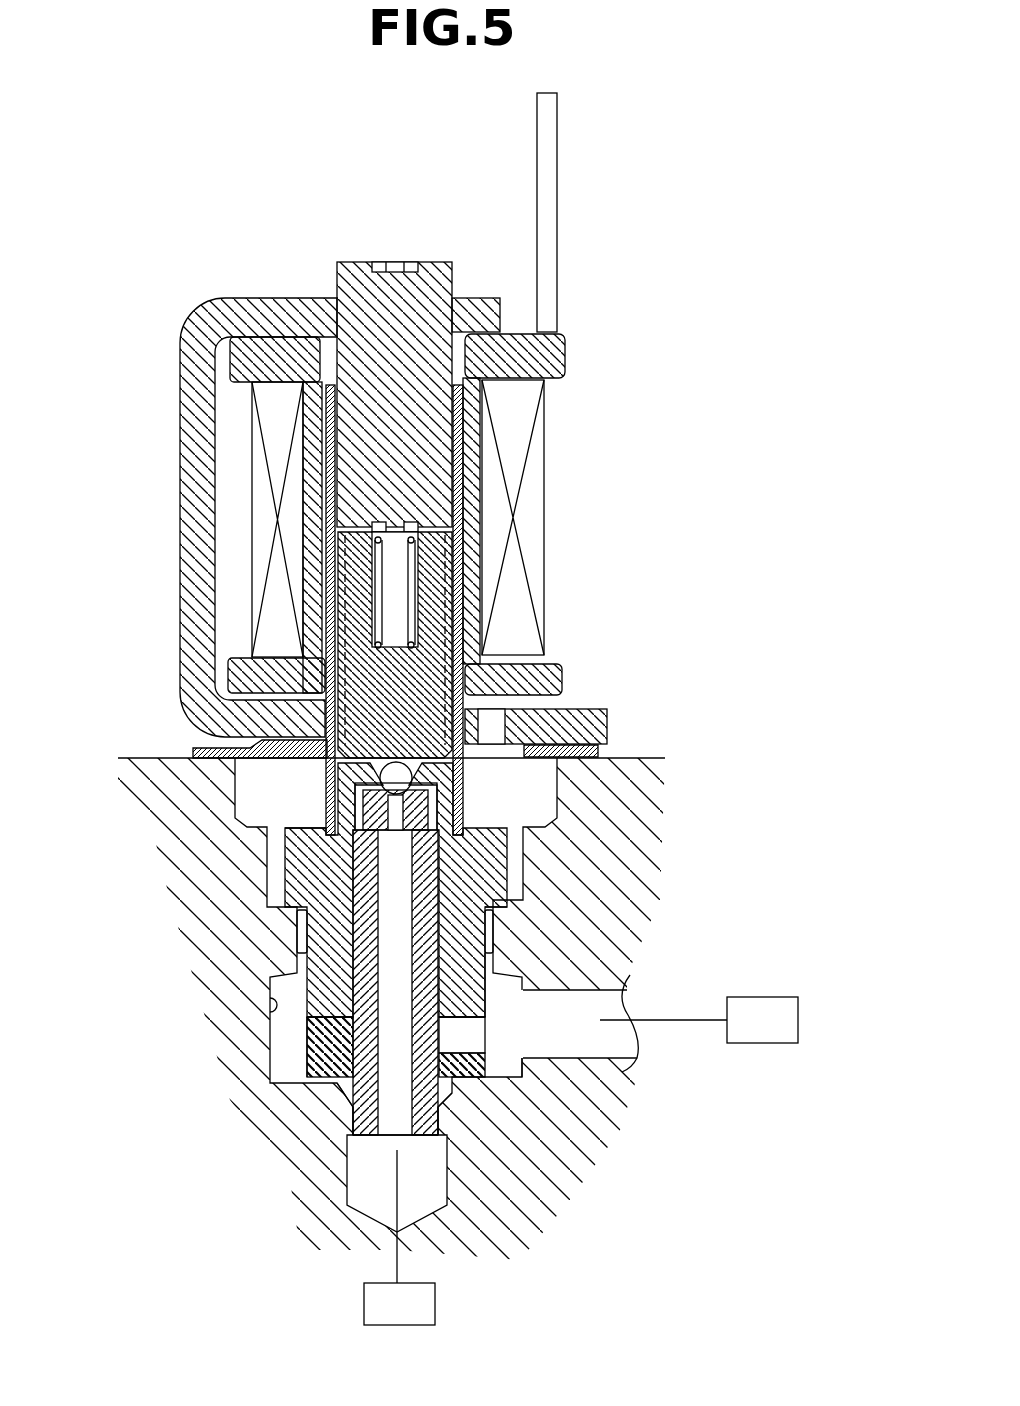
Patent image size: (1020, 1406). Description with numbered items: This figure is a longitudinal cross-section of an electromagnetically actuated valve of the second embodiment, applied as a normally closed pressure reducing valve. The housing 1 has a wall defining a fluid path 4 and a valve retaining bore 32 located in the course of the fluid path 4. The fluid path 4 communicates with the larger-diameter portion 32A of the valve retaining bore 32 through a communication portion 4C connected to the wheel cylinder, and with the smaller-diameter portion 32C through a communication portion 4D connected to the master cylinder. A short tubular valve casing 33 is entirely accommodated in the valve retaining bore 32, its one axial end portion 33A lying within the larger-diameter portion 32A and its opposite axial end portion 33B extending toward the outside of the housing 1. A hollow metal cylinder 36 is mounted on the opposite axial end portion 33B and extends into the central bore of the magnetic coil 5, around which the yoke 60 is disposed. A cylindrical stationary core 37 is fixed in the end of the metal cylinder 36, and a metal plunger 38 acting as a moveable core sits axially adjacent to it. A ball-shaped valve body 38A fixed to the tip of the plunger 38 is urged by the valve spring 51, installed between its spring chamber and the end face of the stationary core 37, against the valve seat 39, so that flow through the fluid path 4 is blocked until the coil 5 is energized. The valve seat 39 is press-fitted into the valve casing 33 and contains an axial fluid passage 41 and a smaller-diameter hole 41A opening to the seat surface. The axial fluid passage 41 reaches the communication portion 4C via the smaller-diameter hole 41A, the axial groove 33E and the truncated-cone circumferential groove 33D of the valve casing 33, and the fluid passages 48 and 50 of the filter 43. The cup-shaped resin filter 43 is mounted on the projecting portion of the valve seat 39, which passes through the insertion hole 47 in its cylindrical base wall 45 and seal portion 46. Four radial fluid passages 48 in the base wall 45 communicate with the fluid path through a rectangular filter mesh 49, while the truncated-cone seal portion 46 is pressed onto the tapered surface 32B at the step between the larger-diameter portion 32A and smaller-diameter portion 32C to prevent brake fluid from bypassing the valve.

The housing 1 is at (172, 768).
The fluid path 4 is at (640, 1000).
The communication portion 4C is at (577, 1038).
The communication portion 4D is at (450, 1105).
The magnetic coil 5 is at (531, 409).
The valve retaining bore 32 is at (260, 857).
The larger-diameter portion 32A is at (273, 1005).
The tapered surface 32B is at (345, 1100).
The smaller-diameter portion 32C is at (470, 1100).
The tubular valve casing 33 is at (490, 880).
The one axial end portion 33A is at (477, 957).
The opposite axial end portion 33B is at (347, 807).
The circumferential groove 33D is at (480, 977).
The axial groove 33E is at (517, 920).
The hollow metal cylinder 36 is at (455, 489).
The stationary core 37 is at (343, 277).
The metal plunger 38 is at (420, 662).
The ball-shaped valve body 38A is at (403, 777).
The valve seat 39 is at (300, 955).
The axial fluid passage 41 is at (373, 925).
The smaller-diameter hole 41A is at (400, 813).
The filter 43 is at (300, 1033).
The cylindrical base wall 45 is at (313, 1053).
The seal portion 46 is at (423, 1157).
The insertion hole 47 is at (350, 1120).
The radial fluid passages 48 is at (460, 1095).
The rectangular filter mesh 49 is at (530, 1077).
The fluid passage 50 is at (337, 1020).
The valve spring 51 is at (418, 555).
The yoke 60 is at (185, 400).